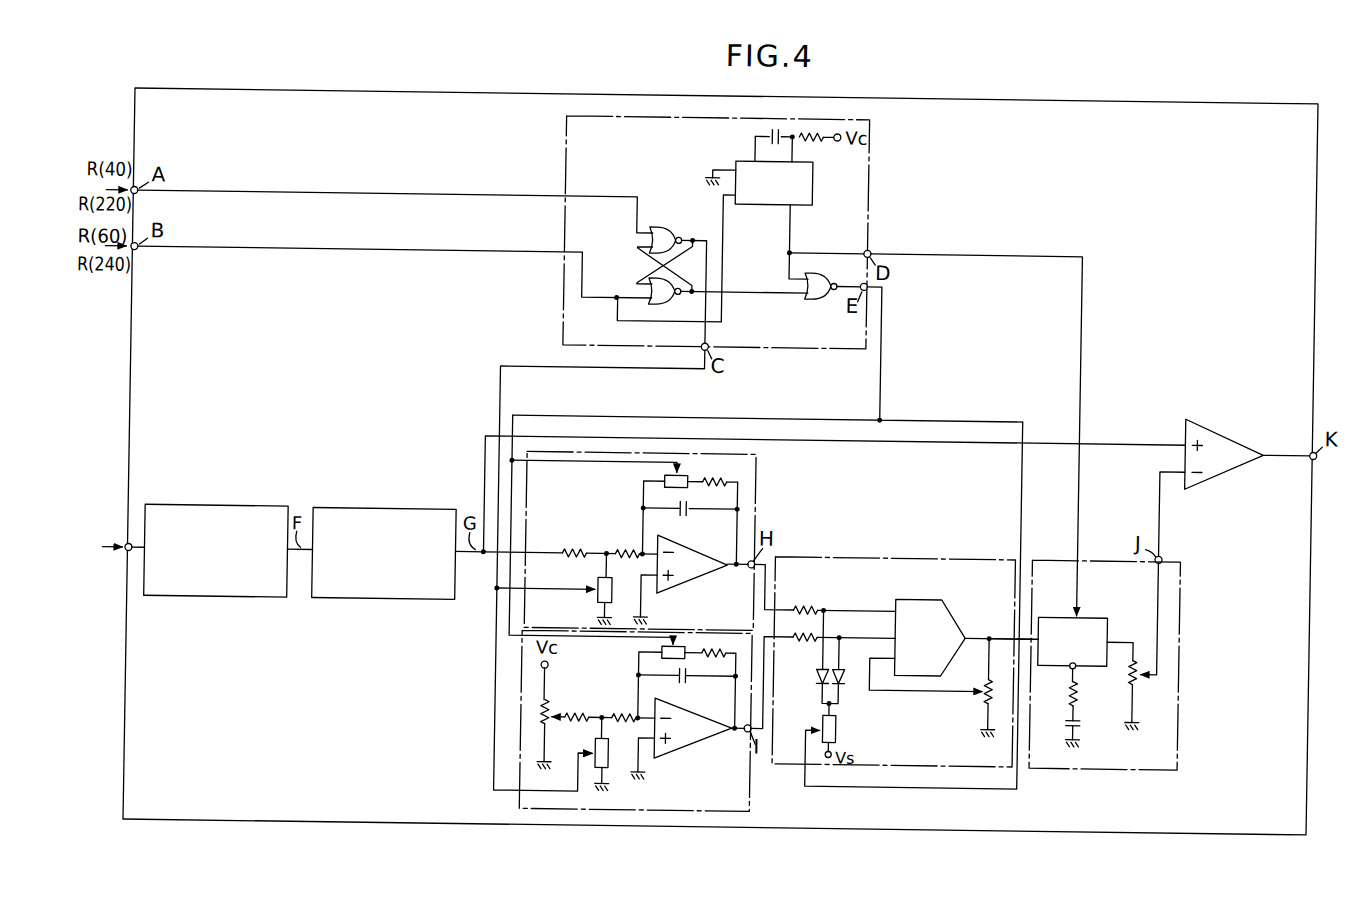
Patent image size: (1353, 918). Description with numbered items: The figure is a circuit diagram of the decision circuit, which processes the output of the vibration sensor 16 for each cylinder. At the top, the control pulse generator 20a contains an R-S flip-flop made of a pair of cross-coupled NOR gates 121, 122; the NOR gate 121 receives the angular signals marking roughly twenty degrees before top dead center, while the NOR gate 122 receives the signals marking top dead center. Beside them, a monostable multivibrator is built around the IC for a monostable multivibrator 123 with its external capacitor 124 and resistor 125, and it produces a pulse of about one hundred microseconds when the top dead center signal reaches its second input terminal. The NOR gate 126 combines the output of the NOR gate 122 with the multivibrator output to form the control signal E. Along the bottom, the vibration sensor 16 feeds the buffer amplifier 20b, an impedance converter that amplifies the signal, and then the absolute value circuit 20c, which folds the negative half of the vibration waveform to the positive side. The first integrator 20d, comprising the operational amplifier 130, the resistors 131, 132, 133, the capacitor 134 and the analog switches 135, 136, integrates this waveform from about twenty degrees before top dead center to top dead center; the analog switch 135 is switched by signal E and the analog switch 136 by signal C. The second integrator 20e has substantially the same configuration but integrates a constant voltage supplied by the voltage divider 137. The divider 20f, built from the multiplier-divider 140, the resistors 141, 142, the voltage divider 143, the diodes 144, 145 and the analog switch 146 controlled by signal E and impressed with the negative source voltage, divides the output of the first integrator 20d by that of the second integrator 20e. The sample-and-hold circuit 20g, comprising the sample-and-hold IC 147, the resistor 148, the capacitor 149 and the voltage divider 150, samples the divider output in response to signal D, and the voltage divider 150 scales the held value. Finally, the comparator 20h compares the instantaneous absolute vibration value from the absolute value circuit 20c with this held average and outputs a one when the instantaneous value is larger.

The vibration sensor 16 is at (103, 546).
The control pulse generator 20a is at (872, 116).
The buffer amplifier 20b is at (248, 596).
The absolute value circuit 20c is at (408, 596).
The first integrator 20d is at (762, 448).
The second integrator 20e is at (762, 770).
The divider 20f is at (950, 548).
The sample-and-hold circuit 20g is at (1190, 613).
The comparator 20h is at (1243, 426).
The NOR gate 121 is at (667, 220).
The NOR gate 122 is at (680, 298).
The IC for a monostable multivibrator 123 is at (814, 178).
The external capacitor 124 is at (768, 121).
The resistor 125 is at (816, 136).
The NOR gate 126 is at (827, 290).
The operational amplifier 130 is at (692, 578).
The resistor 131 is at (576, 542).
The resistor 132 is at (634, 542).
The resistor 133 is at (737, 470).
The capacitor 134 is at (694, 508).
The analog switch 135 is at (670, 468).
The analog switch 136 is at (606, 578).
The voltage divider 137 is at (558, 700).
The multiplier-divider 140 is at (965, 618).
The resistor 141 is at (813, 598).
The resistor 142 is at (812, 632).
The voltage divider 143 is at (994, 690).
The diode 144 is at (826, 674).
The diode 145 is at (855, 674).
The analog switch 146 is at (848, 722).
The sample-and-hold IC 147 is at (1103, 604).
The resistor 148 is at (1089, 684).
The capacitor 149 is at (1089, 717).
The voltage divider 150 is at (1146, 681).